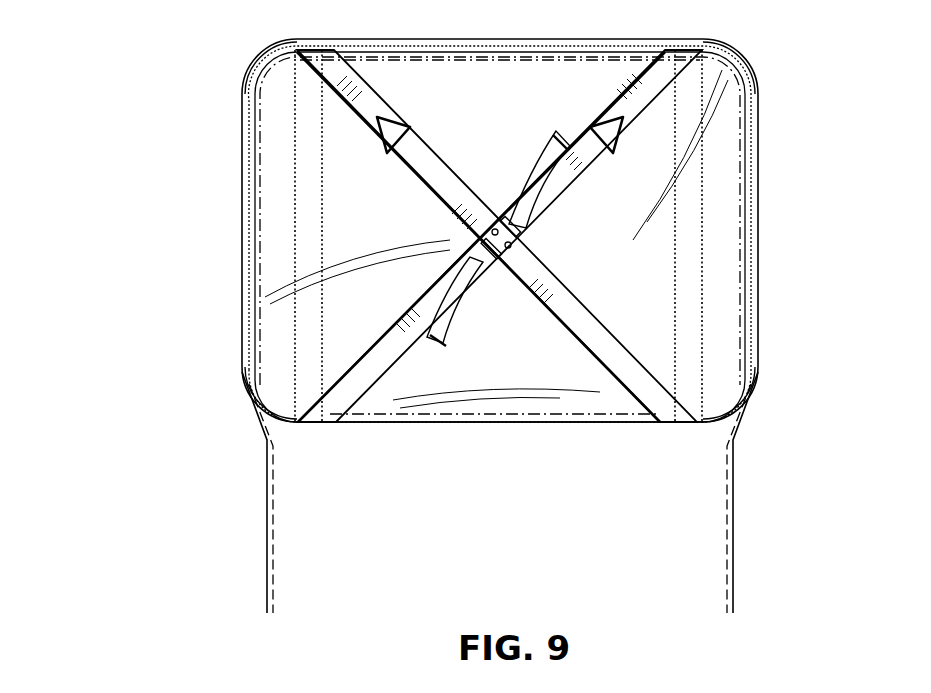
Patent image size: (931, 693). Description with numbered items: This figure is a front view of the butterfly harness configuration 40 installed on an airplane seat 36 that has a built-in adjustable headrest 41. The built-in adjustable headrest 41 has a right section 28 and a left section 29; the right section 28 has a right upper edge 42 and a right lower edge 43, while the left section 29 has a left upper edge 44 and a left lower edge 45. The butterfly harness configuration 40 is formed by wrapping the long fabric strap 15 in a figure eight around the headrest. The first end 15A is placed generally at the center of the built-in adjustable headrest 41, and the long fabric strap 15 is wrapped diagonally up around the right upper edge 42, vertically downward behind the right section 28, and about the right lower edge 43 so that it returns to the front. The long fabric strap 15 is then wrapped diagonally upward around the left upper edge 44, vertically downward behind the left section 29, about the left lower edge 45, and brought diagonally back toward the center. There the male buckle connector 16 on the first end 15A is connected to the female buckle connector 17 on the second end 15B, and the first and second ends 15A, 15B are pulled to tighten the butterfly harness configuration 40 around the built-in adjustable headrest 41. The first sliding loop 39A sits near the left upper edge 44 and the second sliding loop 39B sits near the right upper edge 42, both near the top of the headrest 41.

The butterfly harness configuration 40 is at (182, 96).
The left upper edge 44 is at (268, 80).
The right upper edge 42 is at (724, 78).
The right lower edge 43 is at (717, 387).
The left lower edge 45 is at (277, 373).
The built-in adjustable headrest 41 is at (489, 86).
The left section 29 is at (355, 238).
The right section 28 is at (634, 240).
The airplane seat 36 is at (483, 541).
The long fabric strap 15 is at (341, 82).
The first end 15A is at (558, 131).
The second end 15B is at (424, 345).
The first sliding loop 39A is at (404, 125).
The second sliding loop 39B is at (612, 115).
The male buckle connector 16 is at (498, 224).
The female buckle connector 17 is at (496, 248).